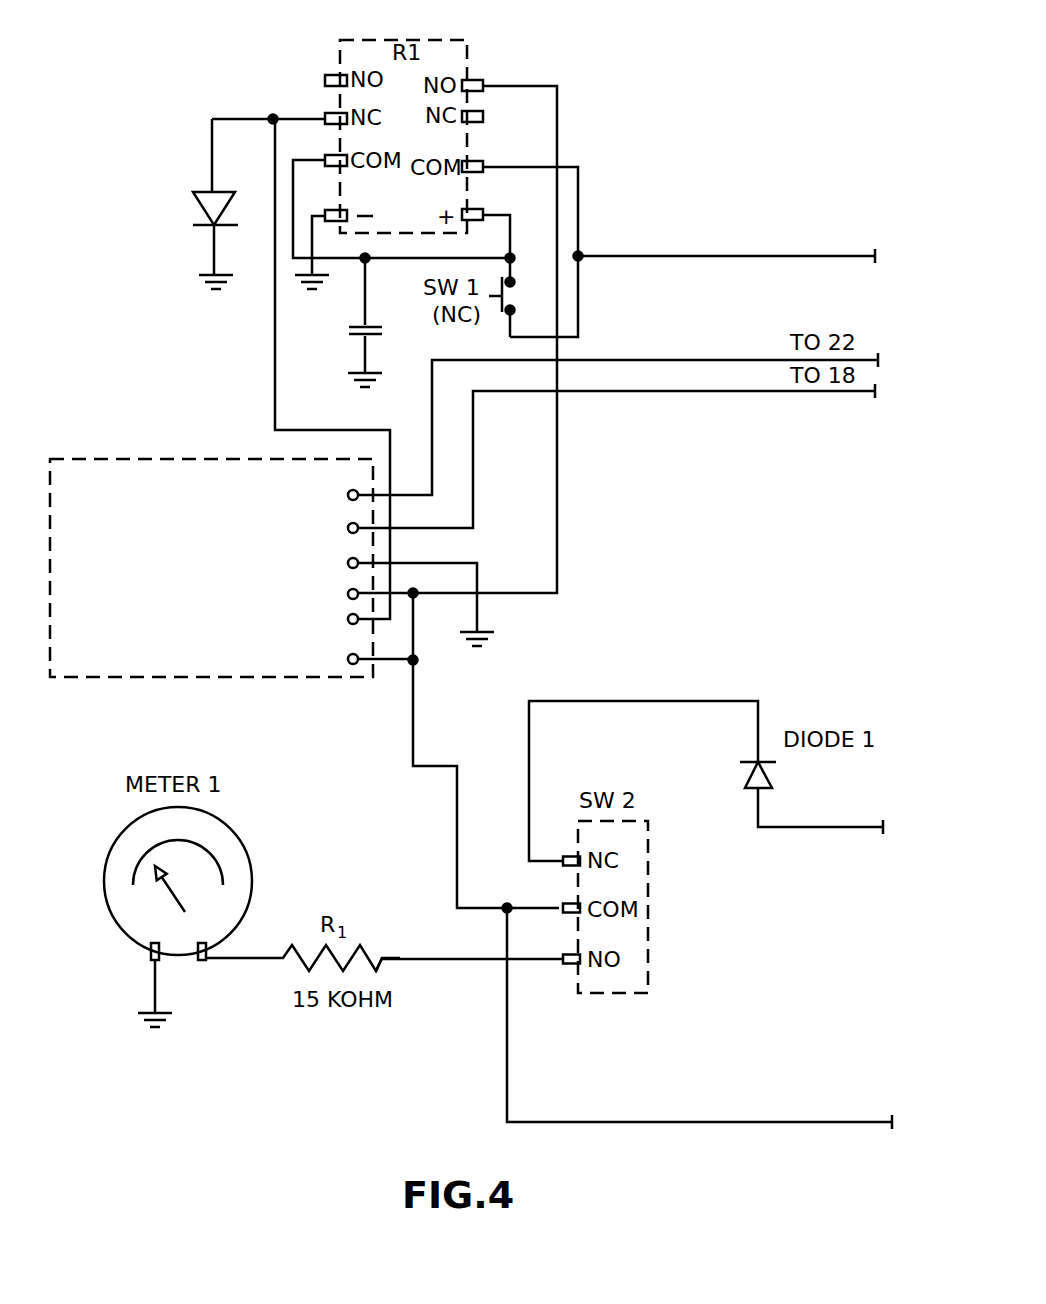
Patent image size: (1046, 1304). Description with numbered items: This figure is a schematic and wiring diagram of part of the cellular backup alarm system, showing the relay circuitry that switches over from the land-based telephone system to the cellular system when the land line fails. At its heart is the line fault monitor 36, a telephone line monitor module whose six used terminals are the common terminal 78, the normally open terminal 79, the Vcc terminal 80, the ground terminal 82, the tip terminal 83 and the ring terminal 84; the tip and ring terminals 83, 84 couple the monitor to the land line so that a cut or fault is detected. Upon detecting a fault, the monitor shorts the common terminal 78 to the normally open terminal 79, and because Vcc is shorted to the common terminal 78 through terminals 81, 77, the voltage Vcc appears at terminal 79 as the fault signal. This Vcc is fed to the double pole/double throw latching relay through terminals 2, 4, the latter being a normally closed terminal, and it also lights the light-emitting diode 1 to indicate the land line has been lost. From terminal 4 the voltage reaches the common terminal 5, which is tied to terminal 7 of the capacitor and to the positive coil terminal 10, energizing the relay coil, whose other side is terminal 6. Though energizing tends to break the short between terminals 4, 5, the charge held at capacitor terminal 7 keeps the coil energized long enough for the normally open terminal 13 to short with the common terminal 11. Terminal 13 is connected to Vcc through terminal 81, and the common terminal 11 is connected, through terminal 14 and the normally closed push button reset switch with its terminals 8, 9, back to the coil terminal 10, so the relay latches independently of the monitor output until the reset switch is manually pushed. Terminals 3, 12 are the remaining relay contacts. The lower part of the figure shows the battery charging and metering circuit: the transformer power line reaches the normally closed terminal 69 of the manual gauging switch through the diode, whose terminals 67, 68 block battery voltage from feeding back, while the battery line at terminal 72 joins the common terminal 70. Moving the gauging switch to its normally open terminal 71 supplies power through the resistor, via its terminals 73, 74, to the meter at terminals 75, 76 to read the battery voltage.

The LED 1 is at (179, 204).
The terminal of relay R1 2 is at (268, 106).
The terminal of relay R1 3 is at (327, 79).
The normally closed terminal of relay R1 4 is at (327, 108).
The common terminal of relay R1 5 is at (401, 195).
The terminal of relay R1 6 is at (321, 238).
The terminal of capacitor C1 7 is at (347, 321).
The terminal of switch SW1 8 is at (513, 288).
The terminal of switch SW1 9 is at (522, 317).
The positive terminal of relay coil of R1 10 is at (487, 235).
The common terminal of relay R1 11 is at (520, 238).
The terminal of relay R1 12 is at (487, 109).
The normally open terminal of relay R1 13 is at (457, 325).
The terminal 14 is at (725, 245).
The line fault monitor 36 is at (143, 677).
The terminal of diode 1 67 is at (820, 823).
The terminal of diode 1 68 is at (748, 760).
The normally closed switch of switch SW2 69 is at (643, 783).
The common terminal of switch SW2 70 is at (558, 895).
The normally open terminal of switch SW2 71 is at (481, 946).
The terminal 72 is at (693, 1003).
The terminal of resistor R1 73 is at (397, 950).
The terminal of resistor R1 74 is at (294, 951).
The terminal of METER1 75 is at (204, 965).
The terminal of METER1 76 is at (145, 985).
The terminal 77 is at (484, 750).
The common terminal 78 is at (380, 648).
The normally open terminal 79 is at (368, 608).
The Vcc terminal 80 is at (368, 584).
The terminal 81 is at (430, 582).
The ground terminal 82 is at (421, 592).
The tip terminal 83 is at (368, 518).
The ring terminal 84 is at (368, 485).